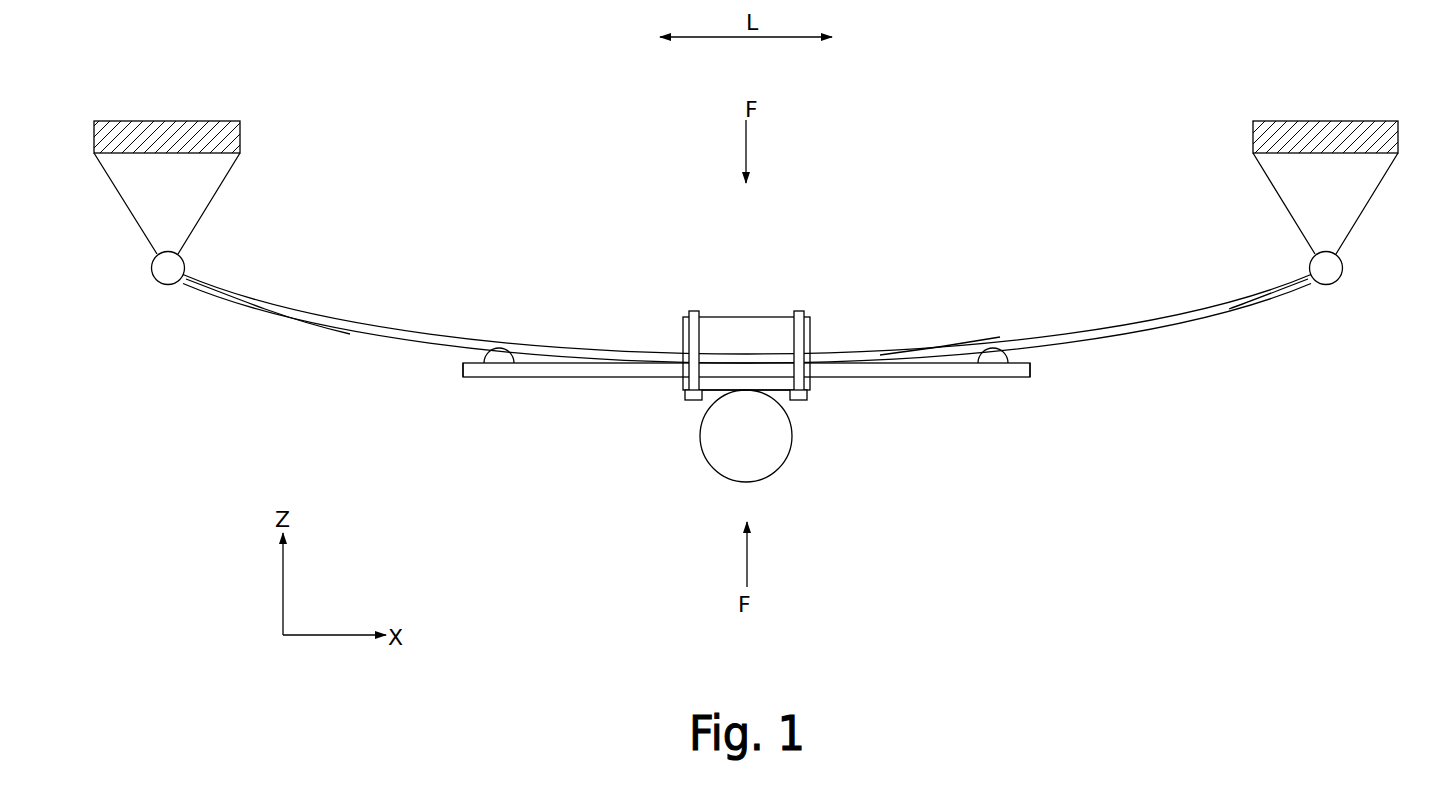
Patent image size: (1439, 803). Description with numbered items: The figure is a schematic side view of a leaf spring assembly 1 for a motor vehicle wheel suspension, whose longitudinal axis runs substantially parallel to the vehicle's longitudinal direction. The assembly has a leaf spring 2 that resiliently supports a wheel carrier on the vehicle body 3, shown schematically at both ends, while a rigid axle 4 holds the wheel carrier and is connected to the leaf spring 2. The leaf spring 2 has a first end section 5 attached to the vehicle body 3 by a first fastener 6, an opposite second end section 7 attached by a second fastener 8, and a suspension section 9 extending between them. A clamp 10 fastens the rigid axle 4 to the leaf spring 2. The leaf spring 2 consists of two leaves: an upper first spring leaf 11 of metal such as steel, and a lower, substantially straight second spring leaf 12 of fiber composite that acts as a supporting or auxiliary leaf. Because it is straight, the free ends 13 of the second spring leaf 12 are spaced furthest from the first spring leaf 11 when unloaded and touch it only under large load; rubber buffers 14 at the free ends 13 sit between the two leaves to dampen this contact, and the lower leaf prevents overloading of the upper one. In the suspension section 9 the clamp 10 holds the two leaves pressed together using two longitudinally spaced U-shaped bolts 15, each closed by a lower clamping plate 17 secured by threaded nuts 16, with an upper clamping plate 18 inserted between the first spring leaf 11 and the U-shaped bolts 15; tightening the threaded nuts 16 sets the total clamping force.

The leaf spring assembly 1 is at (978, 160).
The leaf spring 2 is at (1088, 353).
The vehicle body 3 is at (236, 134).
The rigid axle 4 is at (766, 463).
The first end section 5 is at (205, 304).
The first fastener 6 is at (162, 273).
The second end section 7 is at (1312, 300).
The second fastener 8 is at (1342, 268).
The suspension section 9 is at (917, 336).
The clamp 10 is at (748, 351).
The first spring leaf 11 is at (293, 318).
The second spring leaf 12 is at (537, 370).
The free ends 13 is at (478, 382).
The rubber buffers 14 is at (499, 357).
The U-shaped bolts 15 is at (694, 311).
The threaded nuts 16 is at (687, 398).
The lower clamping plate 17 is at (782, 383).
The upper clamping plate 18 is at (765, 330).